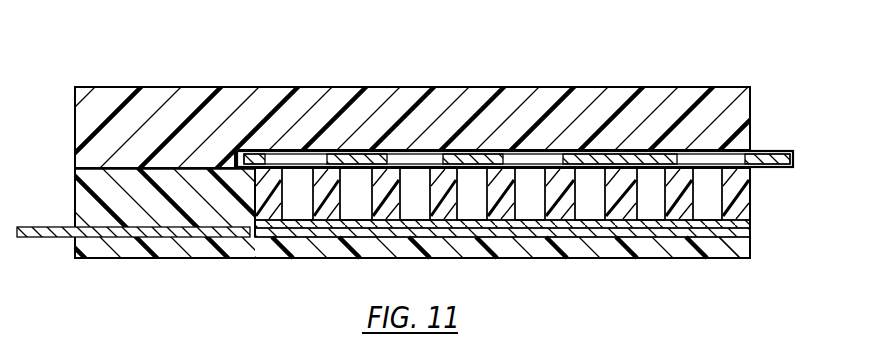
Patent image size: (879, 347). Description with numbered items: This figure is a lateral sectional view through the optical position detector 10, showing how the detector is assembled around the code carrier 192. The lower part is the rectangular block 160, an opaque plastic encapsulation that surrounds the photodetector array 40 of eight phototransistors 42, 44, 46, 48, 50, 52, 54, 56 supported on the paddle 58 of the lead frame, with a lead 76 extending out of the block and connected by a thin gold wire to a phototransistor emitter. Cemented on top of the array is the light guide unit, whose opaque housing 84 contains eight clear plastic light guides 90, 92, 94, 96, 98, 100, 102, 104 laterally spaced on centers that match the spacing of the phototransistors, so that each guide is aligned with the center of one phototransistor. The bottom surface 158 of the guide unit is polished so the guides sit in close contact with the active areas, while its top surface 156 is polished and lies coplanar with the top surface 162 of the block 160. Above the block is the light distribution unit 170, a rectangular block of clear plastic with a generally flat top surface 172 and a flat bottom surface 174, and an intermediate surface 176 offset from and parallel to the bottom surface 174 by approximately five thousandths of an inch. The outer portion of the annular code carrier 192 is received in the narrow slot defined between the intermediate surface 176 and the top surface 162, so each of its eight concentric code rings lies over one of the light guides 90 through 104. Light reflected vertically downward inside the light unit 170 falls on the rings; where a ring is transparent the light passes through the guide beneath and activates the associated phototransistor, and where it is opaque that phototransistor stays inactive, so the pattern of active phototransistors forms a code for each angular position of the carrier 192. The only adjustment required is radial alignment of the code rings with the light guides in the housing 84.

The optical position detector 10 is at (409, 73).
The photodetector array 40 is at (760, 245).
The photodetector 42 is at (290, 260).
The photodetector 44 is at (355, 260).
The photodetector 46 is at (418, 260).
The photodetector 48 is at (475, 260).
The photodetector 50 is at (532, 261).
The photodetector 52 is at (588, 261).
The photodetector 54 is at (647, 261).
The photodetector 56 is at (709, 261).
The paddle 58 is at (736, 256).
The lead 76 is at (52, 240).
The housing 84 is at (742, 222).
The light guide 90 is at (719, 203).
The light guide 92 is at (662, 203).
The light guide 94 is at (601, 203).
The light guide 96 is at (541, 203).
The light guide 98 is at (483, 203).
The light guide 100 is at (427, 203).
The light guide 102 is at (369, 203).
The light guide 104 is at (310, 203).
The top surface of light guide unit 156 is at (752, 169).
The bottom surface of light guide unit 158 is at (745, 232).
The rectangular block 160 is at (88, 202).
The top surface of rectangular block 162 is at (88, 166).
The light distribution unit 170 is at (185, 100).
The top surface 172 is at (505, 88).
The bottom surface 174 is at (87, 170).
The intermediate surface 176 is at (751, 152).
The code carrier 192 is at (783, 190).